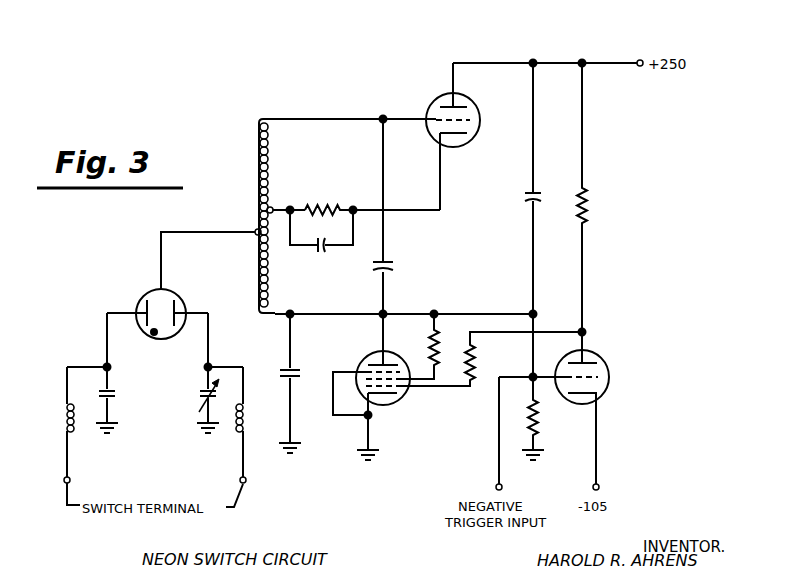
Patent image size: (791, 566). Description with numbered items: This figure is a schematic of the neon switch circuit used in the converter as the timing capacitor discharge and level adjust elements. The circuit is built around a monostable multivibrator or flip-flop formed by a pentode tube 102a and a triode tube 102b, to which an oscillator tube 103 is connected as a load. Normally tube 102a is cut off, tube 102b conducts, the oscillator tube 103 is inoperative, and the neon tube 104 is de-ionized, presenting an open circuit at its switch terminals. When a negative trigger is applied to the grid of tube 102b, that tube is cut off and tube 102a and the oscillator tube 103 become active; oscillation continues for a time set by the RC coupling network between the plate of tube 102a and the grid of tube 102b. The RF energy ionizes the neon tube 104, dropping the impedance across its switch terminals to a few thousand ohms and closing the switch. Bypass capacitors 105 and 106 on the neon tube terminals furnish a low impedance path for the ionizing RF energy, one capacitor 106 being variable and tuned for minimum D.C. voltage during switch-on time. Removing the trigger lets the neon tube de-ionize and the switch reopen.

The pentode tube 102a is at (361, 365).
The triode tube 102b is at (599, 357).
The oscillator tube 103 is at (490, 108).
The neon tube 104 is at (180, 297).
The bypass capacitor 105 is at (111, 396).
The variable bypass capacitor 106 is at (200, 397).